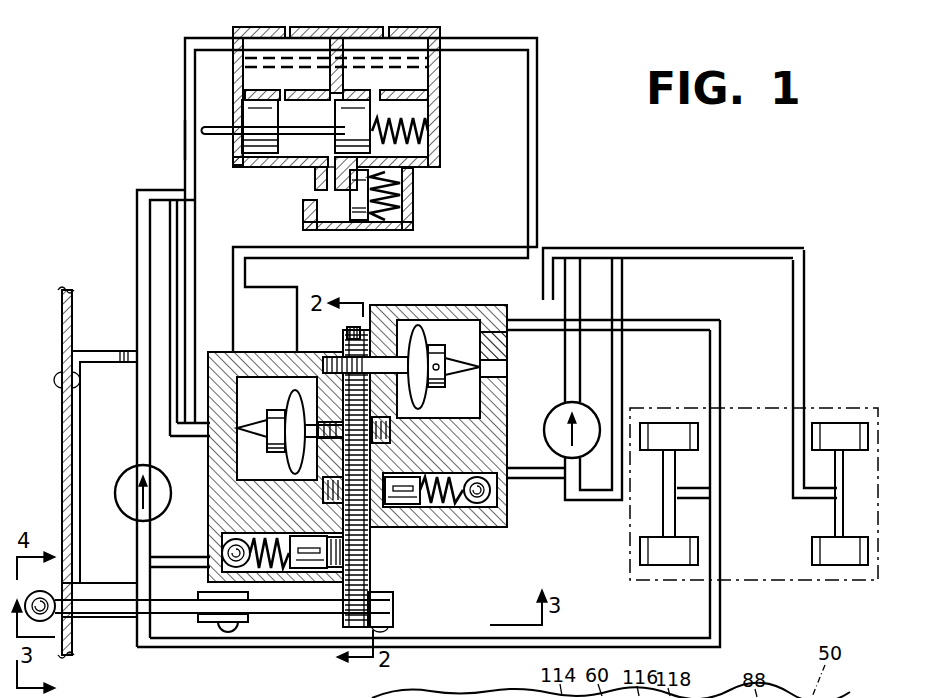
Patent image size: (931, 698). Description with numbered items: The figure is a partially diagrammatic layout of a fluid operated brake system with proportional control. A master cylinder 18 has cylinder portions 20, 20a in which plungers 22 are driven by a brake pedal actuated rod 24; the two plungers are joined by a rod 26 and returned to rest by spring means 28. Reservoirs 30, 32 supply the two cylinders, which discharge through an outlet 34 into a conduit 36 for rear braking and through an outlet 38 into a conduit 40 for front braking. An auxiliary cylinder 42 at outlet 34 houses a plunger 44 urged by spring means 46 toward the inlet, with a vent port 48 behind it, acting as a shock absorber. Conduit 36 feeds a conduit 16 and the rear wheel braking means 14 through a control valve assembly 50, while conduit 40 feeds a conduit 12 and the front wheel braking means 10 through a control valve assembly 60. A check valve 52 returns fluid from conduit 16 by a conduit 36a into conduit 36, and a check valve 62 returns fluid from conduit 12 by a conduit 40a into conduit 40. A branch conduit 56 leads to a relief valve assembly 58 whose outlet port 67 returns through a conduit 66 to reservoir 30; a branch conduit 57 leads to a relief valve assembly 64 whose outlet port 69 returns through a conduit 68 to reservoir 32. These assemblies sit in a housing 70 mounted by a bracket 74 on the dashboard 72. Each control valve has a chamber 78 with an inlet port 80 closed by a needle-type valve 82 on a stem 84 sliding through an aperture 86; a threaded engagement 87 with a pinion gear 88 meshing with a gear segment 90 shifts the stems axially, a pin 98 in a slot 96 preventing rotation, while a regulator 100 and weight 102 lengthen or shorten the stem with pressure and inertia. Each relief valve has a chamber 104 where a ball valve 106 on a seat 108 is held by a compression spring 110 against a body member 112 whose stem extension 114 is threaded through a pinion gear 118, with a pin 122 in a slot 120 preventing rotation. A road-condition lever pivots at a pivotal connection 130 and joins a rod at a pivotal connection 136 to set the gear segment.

The front wheel braking means 10 is at (850, 445).
The conduit 12 is at (240, 296).
The rear wheel braking means 14 is at (657, 442).
The conduit 16 is at (715, 353).
The master cylinder 18 is at (434, 82).
The cylinder portion 20 is at (293, 112).
The cylinder portion 20a is at (418, 110).
The plunger 22 is at (255, 117).
The brake pedal actuated rod 24 is at (230, 136).
The rod 26 is at (290, 170).
The spring means 28 is at (422, 128).
The reservoir 30 is at (258, 47).
The reservoir 32 is at (413, 48).
The outlet 34 is at (334, 176).
The conduit 36 is at (297, 295).
The conduit 36a is at (168, 194).
The outlet 38 is at (423, 161).
The conduit 40 is at (168, 272).
The conduit 40a is at (604, 255).
The auxiliary cylinder 42 is at (410, 182).
The plunger 44 is at (362, 207).
The spring means 46 is at (317, 223).
The vent port 48 is at (405, 201).
The control valve assembly 50 is at (505, 348).
The check valve 52 is at (124, 472).
The branch conduit 56 is at (178, 556).
The branch conduit 57 is at (558, 495).
The relief valve assembly 58 is at (243, 572).
The control valve assembly 60 is at (217, 388).
The check valve 62 is at (582, 416).
The relief valve assembly 64 is at (500, 504).
The conduit 66 is at (184, 143).
The outlet port 67 is at (203, 473).
The conduit 68 is at (532, 174).
The outlet port 69 is at (483, 450).
The housing 70 is at (510, 532).
The dashboard 72 is at (62, 326).
The bracket 74 is at (107, 360).
The chamber 78 is at (268, 387).
The inlet port 80 is at (495, 326).
The needle-type valve 82 is at (487, 368).
The stem 84 is at (392, 430).
The aperture 86 is at (403, 352).
The threaded engagement 87 is at (344, 350).
The pinion gear 88 is at (330, 366).
The gear segment 90 is at (363, 604).
The slot 96 is at (382, 352).
The pin 98 is at (423, 338).
The regulator 100 is at (425, 315).
The weight 102 is at (445, 357).
The chamber 104 is at (483, 528).
The ball valve 106 is at (517, 473).
The seat 108 is at (497, 510).
The compression spring 110 is at (300, 578).
The body member 112 is at (315, 572).
The stem extension 114 is at (380, 552).
The pinion gear 118 is at (407, 520).
The slot 120 is at (425, 528).
The pin 122 is at (457, 525).
The pivotal connection 130 is at (223, 628).
The pivotal connection 136 is at (393, 622).